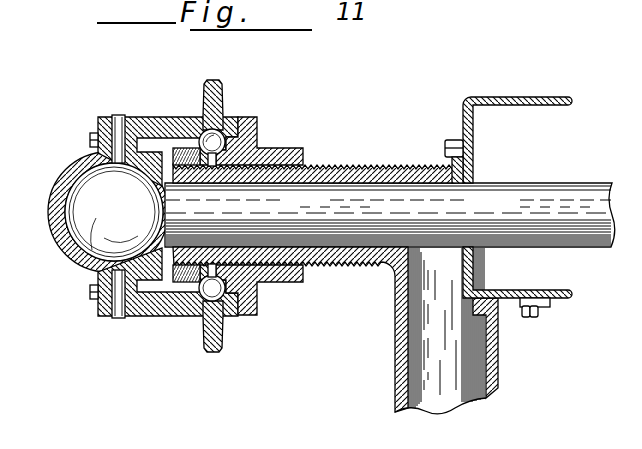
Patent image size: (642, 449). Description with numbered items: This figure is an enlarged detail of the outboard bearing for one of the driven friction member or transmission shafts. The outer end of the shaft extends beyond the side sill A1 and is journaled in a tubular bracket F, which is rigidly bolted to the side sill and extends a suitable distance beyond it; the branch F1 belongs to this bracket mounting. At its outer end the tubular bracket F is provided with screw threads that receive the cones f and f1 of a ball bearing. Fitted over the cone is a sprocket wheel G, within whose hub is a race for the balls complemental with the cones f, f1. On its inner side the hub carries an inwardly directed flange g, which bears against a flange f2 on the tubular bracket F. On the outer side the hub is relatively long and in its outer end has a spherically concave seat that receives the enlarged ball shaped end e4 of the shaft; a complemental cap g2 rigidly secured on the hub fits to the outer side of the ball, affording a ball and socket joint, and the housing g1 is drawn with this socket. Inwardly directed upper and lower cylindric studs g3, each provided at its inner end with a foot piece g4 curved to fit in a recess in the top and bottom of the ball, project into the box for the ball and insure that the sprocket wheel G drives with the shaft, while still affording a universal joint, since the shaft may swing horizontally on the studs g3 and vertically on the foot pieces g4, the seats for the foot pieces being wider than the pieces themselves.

The tubular bracket F is at (335, 161).
The branch pipe F1 is at (396, 342).
The side sill A1 is at (548, 110).
The sprocket wheel G is at (226, 124).
The inwardly directed flange g is at (233, 137).
The socket housing g1 is at (181, 303).
The complemental cap g2 is at (72, 178).
The cylindric studs g3 is at (115, 333).
The foot piece g4 is at (84, 277).
The ball shaped end e4 is at (66, 248).
The cone f is at (254, 121).
The cone f1 is at (186, 117).
The flange f2 is at (262, 284).